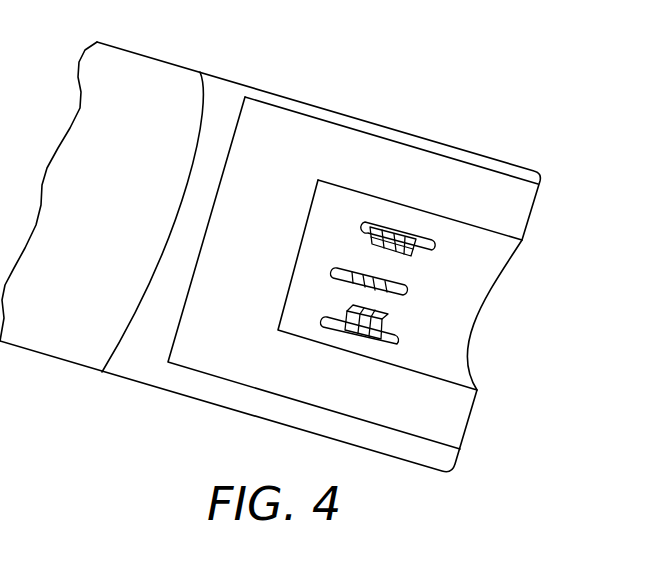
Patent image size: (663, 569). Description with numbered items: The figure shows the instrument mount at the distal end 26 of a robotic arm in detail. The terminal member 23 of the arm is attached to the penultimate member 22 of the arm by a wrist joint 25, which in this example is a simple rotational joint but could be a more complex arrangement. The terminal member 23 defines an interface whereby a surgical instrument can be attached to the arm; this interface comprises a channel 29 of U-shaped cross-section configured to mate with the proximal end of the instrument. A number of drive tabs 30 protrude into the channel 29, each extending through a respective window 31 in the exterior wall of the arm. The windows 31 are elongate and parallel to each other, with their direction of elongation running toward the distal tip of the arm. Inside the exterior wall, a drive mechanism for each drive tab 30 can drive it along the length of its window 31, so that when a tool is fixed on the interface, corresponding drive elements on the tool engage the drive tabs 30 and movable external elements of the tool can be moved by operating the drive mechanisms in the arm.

The penultimate member 22 is at (143, 65).
The terminal member 23 is at (230, 92).
The wrist joint 25 is at (157, 284).
The distal end 26 is at (486, 135).
The channel 29 is at (470, 312).
The drive tabs 30 is at (412, 240).
The windows 31 is at (362, 223).